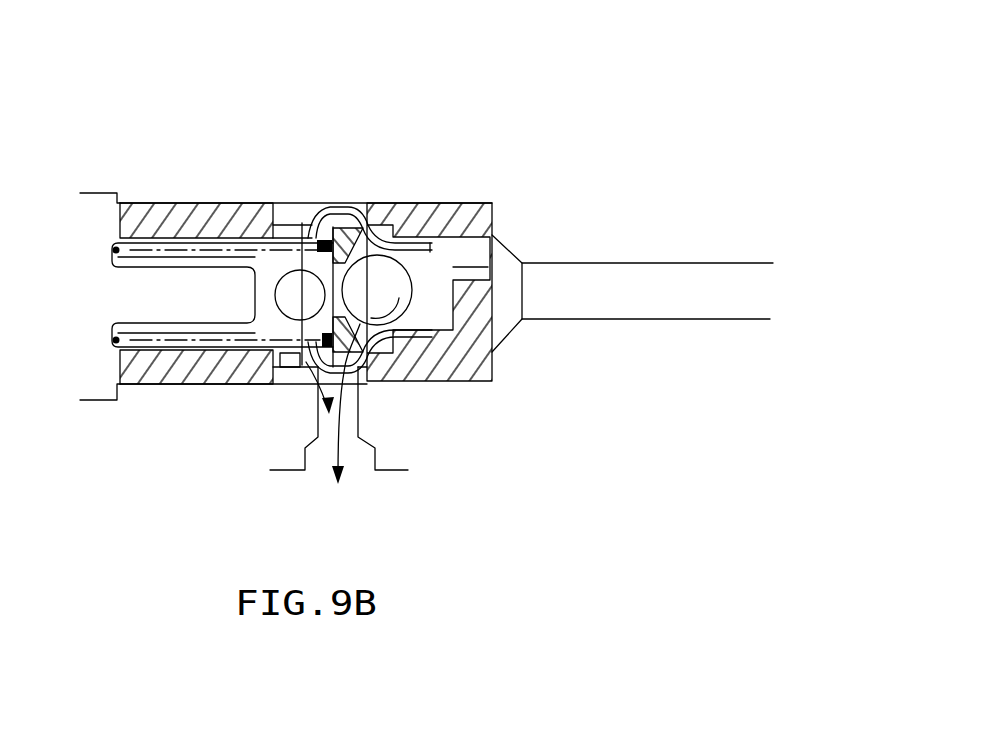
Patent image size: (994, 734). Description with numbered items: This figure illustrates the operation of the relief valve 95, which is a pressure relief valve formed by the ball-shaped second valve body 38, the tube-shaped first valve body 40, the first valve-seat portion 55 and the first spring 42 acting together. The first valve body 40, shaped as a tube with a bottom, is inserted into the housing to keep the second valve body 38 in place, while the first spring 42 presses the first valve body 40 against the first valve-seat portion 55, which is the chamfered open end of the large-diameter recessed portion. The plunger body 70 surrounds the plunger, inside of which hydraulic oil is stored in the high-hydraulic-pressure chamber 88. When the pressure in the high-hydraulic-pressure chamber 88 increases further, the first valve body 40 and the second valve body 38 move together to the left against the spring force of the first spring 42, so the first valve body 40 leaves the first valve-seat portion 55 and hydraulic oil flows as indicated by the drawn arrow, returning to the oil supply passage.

The relief valve 95 is at (236, 156).
The first spring 42 is at (207, 203).
The first valve body 40 is at (357, 237).
The first valve-seat portion 55 is at (378, 280).
The second valve body 38 is at (440, 205).
The high-hydraulic-pressure chamber 88 is at (742, 318).
The plunger body 70 is at (163, 440).